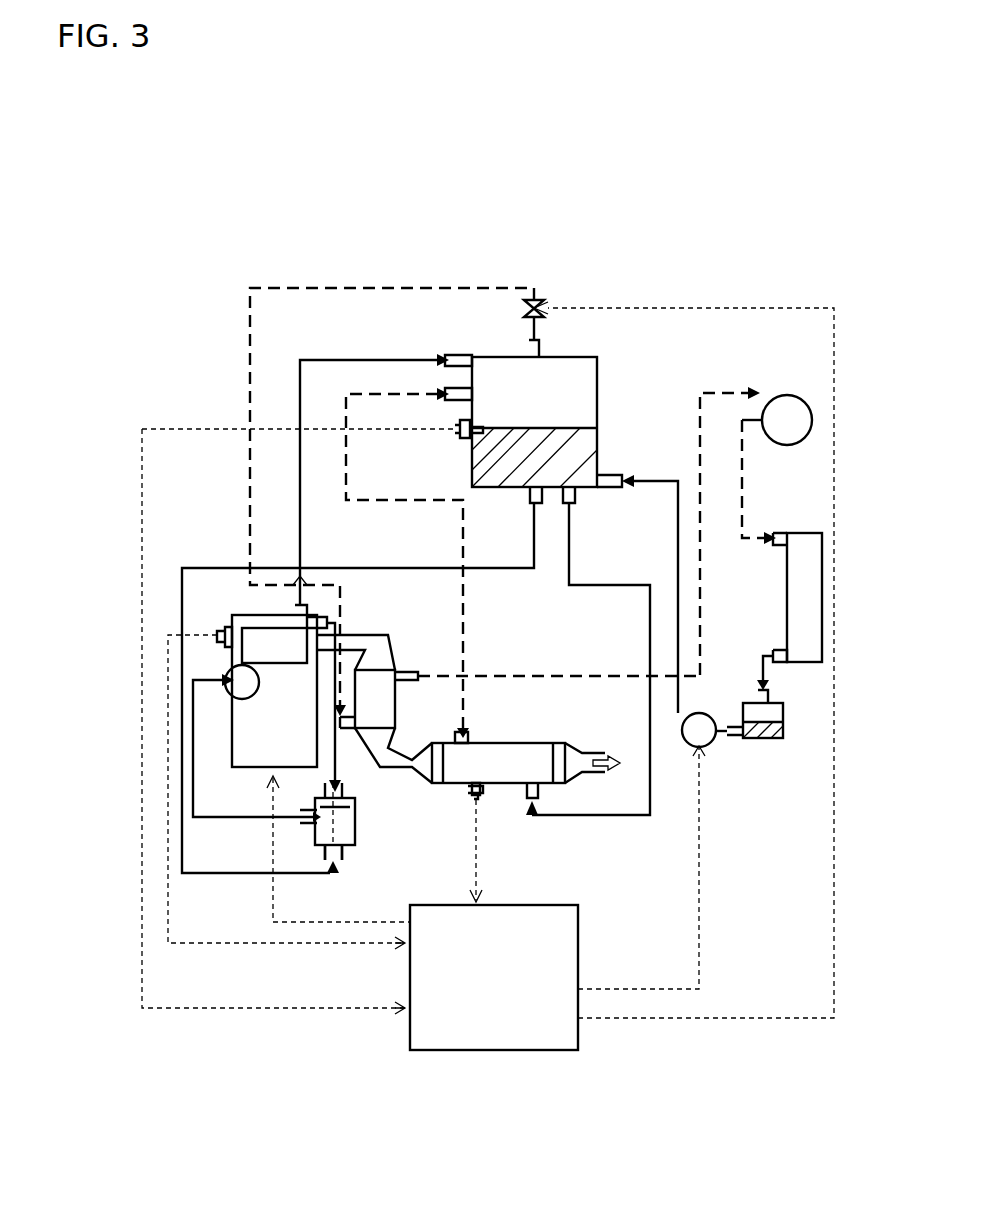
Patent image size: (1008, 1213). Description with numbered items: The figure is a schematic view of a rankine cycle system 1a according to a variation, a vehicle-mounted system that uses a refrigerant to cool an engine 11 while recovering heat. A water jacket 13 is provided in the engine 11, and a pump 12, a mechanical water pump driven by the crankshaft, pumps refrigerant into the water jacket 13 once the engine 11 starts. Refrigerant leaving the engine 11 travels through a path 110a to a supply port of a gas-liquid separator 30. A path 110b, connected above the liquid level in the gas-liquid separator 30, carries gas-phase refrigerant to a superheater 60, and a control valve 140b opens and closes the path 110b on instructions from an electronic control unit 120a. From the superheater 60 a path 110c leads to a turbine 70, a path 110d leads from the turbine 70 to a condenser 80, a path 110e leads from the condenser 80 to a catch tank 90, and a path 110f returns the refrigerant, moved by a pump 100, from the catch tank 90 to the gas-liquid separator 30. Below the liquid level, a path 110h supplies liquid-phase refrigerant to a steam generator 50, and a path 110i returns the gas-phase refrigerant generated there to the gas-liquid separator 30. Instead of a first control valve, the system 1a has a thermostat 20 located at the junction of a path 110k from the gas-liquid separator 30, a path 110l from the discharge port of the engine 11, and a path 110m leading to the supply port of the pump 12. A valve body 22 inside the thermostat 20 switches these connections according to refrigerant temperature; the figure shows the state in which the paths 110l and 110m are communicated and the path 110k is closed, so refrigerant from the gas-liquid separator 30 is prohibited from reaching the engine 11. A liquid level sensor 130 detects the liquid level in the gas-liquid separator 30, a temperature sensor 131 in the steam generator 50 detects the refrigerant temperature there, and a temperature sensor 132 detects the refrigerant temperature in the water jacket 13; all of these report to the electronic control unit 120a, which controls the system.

The rankine cycle system 1a is at (184, 207).
The engine 11 is at (244, 768).
The pump 12 is at (243, 700).
The water jacket 13 is at (283, 664).
The thermostat 20 is at (355, 825).
The valve body 22 is at (350, 845).
The gas-liquid separator 30 is at (564, 358).
The steam generator 50 is at (452, 785).
The superheater 60 is at (396, 705).
The turbine 70 is at (780, 399).
The condenser 80 is at (787, 597).
The catch tank 90 is at (783, 736).
The pump 100 is at (706, 748).
The path 110a is at (336, 360).
The path 110b is at (368, 288).
The path 110c is at (536, 680).
The path 110d is at (742, 480).
The path 110e is at (763, 663).
The path 110f is at (680, 557).
The path 110h is at (569, 570).
The path 110i is at (463, 603).
The path 110k is at (422, 568).
The path 110l is at (340, 758).
The path 110m is at (200, 821).
The ECU 120a is at (519, 905).
The liquid level sensor 130 is at (458, 436).
The temperature sensor 131 is at (480, 797).
The temperature sensor 132 is at (222, 627).
The control valve 140b is at (545, 304).